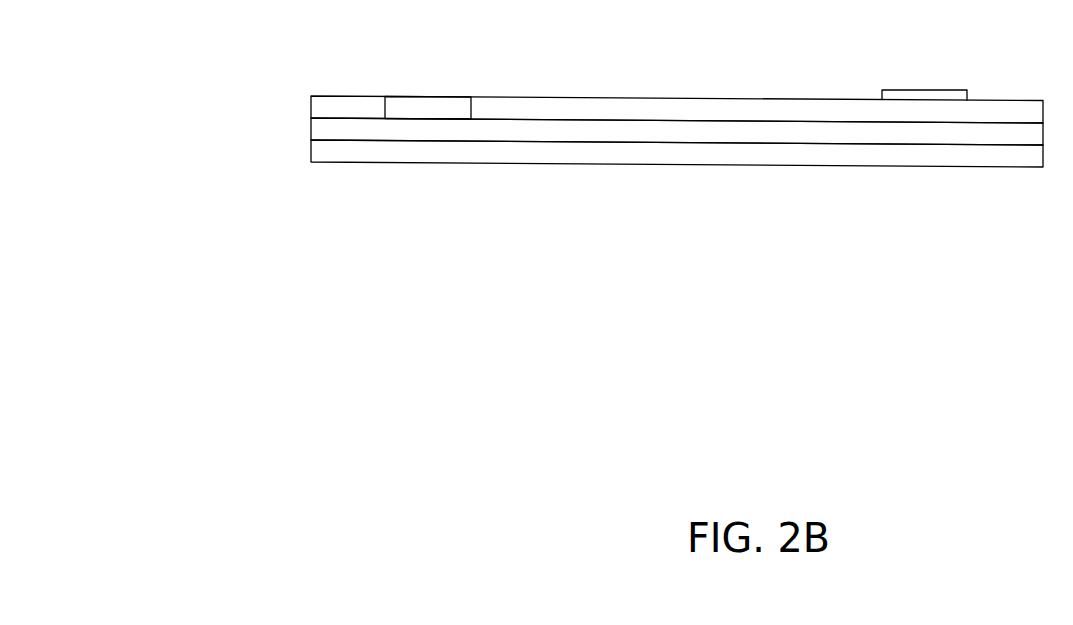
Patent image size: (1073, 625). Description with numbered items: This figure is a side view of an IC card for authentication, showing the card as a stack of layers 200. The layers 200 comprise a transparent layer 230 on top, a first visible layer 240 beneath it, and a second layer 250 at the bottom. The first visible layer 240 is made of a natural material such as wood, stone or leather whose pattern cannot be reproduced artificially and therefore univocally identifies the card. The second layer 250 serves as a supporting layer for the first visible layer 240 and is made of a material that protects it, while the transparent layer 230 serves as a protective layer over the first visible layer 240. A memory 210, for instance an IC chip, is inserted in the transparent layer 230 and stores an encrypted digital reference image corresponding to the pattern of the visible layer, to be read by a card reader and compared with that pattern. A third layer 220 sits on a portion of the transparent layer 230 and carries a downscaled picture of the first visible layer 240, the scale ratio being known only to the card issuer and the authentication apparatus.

The layers 200 is at (598, 130).
The memory 210 is at (423, 103).
The third layer 220 is at (931, 90).
The transparent layer 230 is at (311, 103).
The first visible layer 240 is at (311, 126).
The second layer 250 is at (311, 149).